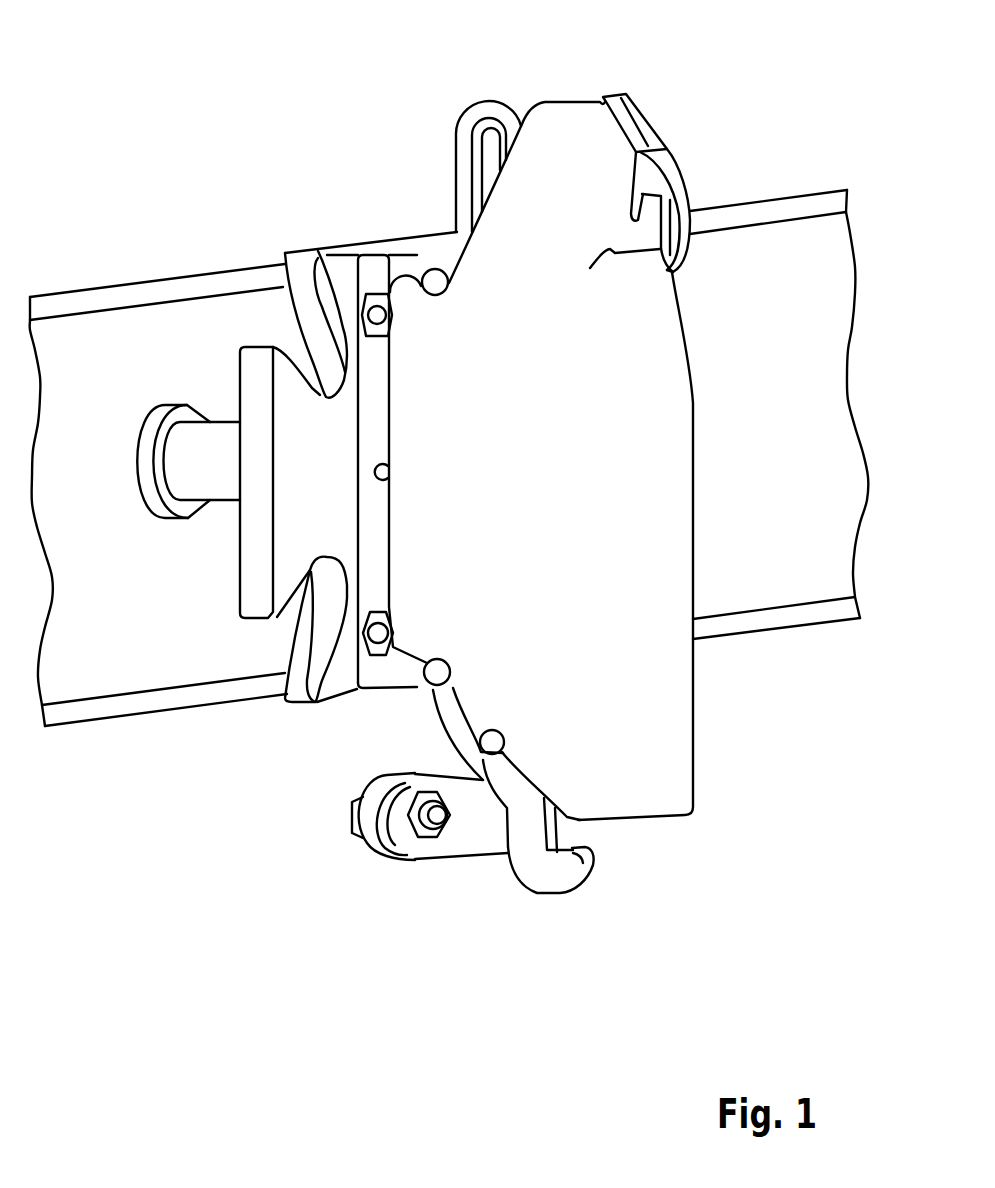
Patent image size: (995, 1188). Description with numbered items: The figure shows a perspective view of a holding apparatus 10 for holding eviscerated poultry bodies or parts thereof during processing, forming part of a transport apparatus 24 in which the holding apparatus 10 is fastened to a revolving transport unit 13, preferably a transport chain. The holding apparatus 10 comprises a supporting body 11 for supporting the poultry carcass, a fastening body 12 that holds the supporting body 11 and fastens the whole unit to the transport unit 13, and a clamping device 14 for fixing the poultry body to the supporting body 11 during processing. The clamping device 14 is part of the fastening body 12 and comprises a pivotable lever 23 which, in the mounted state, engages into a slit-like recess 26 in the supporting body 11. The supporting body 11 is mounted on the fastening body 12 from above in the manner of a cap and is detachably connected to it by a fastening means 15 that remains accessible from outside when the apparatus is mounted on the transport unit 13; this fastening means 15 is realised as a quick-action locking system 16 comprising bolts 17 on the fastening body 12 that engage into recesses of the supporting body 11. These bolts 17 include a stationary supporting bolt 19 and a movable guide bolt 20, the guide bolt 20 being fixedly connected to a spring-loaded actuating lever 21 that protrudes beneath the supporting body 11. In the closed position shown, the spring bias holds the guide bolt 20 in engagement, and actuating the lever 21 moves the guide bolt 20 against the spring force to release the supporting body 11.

The holding apparatus 10 is at (392, 203).
The supporting body 11 is at (678, 467).
The fastening body 12 is at (373, 430).
The transport unit 13 is at (100, 330).
The clamping device 14 is at (687, 171).
The fastening means 15 is at (513, 925).
The quick-action locking system 16 is at (577, 908).
The bolts 17 is at (415, 254).
The stationary supporting bolt 19 is at (433, 284).
The movable guide bolt 20 is at (492, 740).
The actuating lever 21 is at (583, 862).
The pivotable lever 23 is at (675, 237).
The transport apparatus 24 is at (130, 114).
The slit-like recess 26 is at (634, 129).